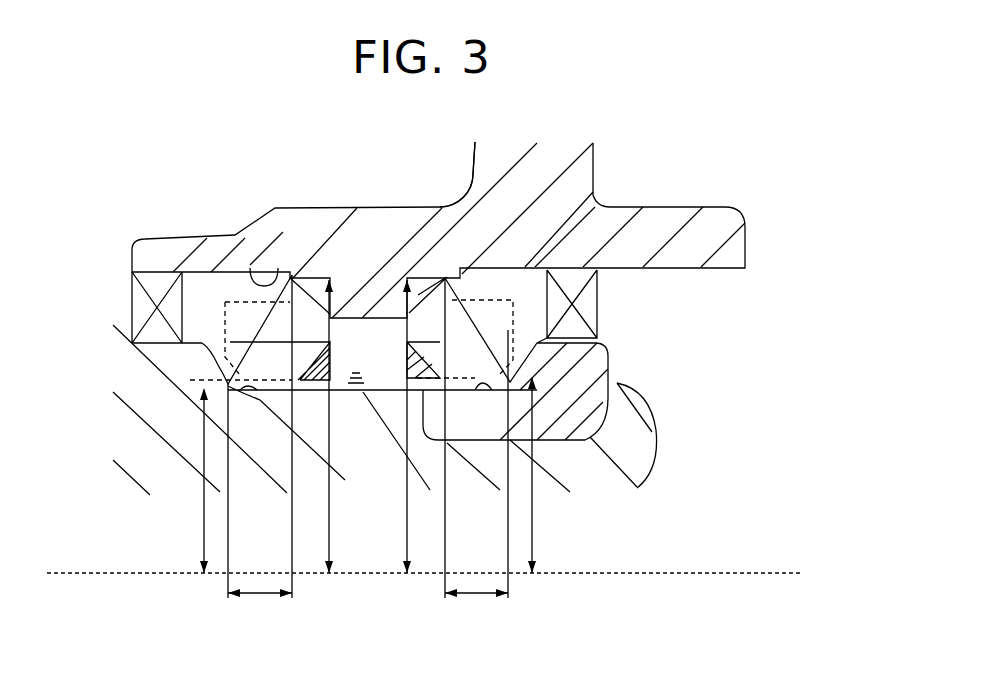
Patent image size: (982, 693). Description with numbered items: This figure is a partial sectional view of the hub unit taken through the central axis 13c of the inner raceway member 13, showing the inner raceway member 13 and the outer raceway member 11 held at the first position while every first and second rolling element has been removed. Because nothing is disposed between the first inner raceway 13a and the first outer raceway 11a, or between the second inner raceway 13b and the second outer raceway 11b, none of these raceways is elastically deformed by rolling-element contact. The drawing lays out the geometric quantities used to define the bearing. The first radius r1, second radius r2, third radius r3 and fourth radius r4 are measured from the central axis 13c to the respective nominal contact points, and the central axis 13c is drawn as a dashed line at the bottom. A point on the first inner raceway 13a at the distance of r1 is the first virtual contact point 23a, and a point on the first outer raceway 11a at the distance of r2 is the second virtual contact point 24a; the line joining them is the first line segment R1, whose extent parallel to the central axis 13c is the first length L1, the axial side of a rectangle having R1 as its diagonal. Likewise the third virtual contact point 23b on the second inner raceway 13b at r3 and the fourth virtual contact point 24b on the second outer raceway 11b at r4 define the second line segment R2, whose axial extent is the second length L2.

The outer raceway member 11 is at (381, 208).
The first outer raceway 11a is at (450, 278).
The second outer raceway 11b is at (249, 266).
The second virtual contact point 24a is at (445, 277).
The fourth virtual contact point 24b is at (301, 275).
The first virtual contact point 23a is at (606, 369).
The third virtual contact point 23b is at (222, 381).
The inner raceway member 13 is at (665, 461).
The first inner raceway 13a is at (478, 393).
The second inner raceway 13b is at (262, 400).
The central axis 13c is at (765, 572).
The first line segment R1 is at (490, 333).
The second line segment R2 is at (267, 325).
The first radius r1 is at (534, 536).
The second radius r2 is at (406, 513).
The third radius r3 is at (202, 538).
The fourth radius r4 is at (331, 543).
The first length L1 is at (480, 597).
The second length L2 is at (262, 597).